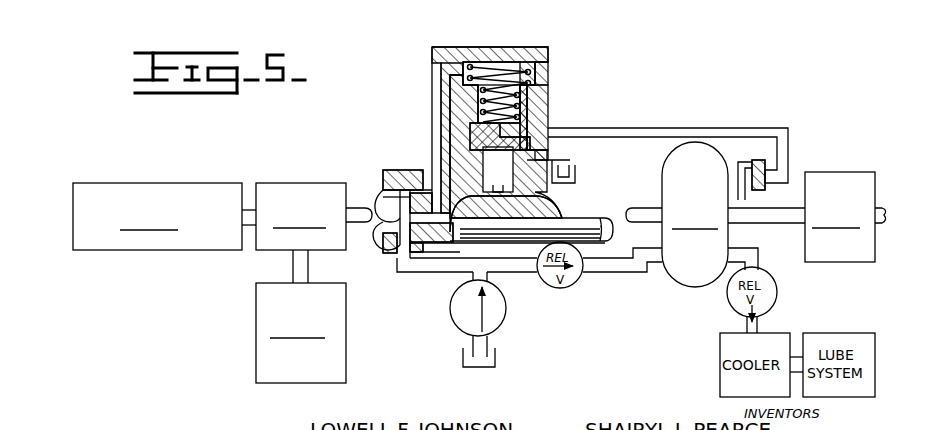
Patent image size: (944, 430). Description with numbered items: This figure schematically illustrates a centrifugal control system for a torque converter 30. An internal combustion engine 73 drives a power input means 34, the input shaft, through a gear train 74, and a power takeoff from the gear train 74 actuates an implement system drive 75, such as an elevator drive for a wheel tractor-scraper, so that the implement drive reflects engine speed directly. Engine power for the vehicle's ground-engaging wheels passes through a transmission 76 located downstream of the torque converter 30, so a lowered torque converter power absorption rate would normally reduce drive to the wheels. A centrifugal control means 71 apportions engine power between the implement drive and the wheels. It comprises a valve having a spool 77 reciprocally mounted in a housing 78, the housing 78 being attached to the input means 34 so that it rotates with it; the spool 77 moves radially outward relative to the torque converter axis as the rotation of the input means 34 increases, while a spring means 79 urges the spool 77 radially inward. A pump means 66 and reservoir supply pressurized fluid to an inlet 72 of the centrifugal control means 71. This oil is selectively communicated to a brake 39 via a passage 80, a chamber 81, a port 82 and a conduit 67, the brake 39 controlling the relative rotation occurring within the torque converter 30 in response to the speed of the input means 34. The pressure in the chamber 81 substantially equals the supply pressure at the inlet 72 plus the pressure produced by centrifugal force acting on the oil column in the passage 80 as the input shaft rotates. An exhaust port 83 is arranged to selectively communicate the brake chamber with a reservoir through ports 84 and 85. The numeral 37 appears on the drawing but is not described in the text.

The torque converter 30 is at (695, 214).
The power input means 34 is at (355, 210).
The conduit 37 is at (674, 1).
The brake 39 is at (754, 158).
The pump means 66 is at (498, 317).
The conduit 67 is at (782, 143).
The centrifugal control means 71 is at (378, 115).
The inlet 72 is at (397, 252).
The internal combustion engine 73 is at (164, 216).
The gear train 74 is at (301, 233).
The implement system drive 75 is at (301, 333).
The transmission 76 is at (840, 217).
The spool 77 is at (528, 127).
The housing 78 is at (432, 66).
The spring means 79 is at (483, 80).
The passage 80 is at (447, 143).
The chamber 81 is at (522, 64).
The port 82 is at (525, 152).
The exhaust port 83 is at (566, 160).
The port 84 is at (522, 137).
The port 85 is at (527, 196).